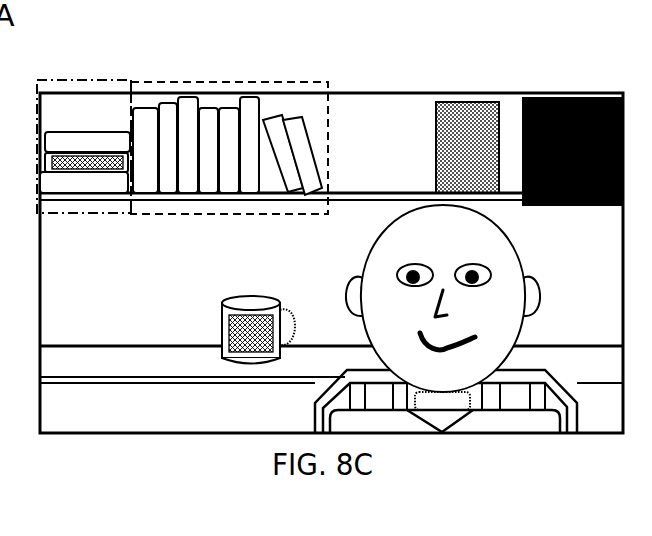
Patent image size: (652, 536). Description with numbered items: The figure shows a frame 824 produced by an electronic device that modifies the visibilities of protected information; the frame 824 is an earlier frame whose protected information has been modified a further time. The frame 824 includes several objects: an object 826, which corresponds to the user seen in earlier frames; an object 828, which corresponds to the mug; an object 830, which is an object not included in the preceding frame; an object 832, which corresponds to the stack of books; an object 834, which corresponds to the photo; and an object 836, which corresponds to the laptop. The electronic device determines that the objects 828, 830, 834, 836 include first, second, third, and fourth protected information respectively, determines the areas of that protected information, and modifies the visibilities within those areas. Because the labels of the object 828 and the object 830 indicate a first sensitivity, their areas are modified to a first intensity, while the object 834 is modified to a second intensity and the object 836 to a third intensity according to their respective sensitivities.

The frame 824 is at (378, 93).
The object 826 is at (515, 242).
The object 828 is at (222, 315).
The object 830 is at (66, 80).
The object 832 is at (225, 122).
The object 834 is at (436, 147).
The object 836 is at (541, 98).